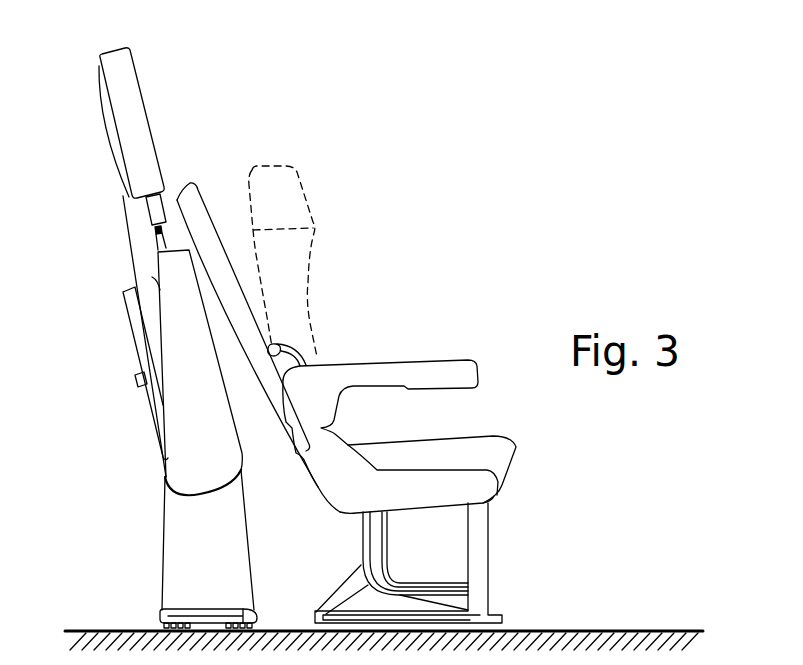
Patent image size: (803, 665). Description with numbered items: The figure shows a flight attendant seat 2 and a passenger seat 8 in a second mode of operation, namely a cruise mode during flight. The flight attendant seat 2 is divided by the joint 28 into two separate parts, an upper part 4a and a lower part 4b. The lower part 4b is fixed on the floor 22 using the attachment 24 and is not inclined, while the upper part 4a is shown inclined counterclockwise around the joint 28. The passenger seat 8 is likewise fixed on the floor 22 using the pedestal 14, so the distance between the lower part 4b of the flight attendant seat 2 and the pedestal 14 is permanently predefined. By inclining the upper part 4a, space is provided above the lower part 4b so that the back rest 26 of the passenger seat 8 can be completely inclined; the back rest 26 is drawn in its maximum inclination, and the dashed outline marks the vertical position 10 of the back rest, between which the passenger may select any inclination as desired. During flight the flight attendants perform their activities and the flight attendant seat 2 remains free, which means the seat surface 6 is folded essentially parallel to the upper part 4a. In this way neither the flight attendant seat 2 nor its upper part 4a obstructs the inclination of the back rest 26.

The flight attendant seat 2 is at (138, 58).
The upper part 4a is at (138, 118).
The lower part 4b is at (232, 556).
The seat surface 6 is at (133, 338).
The passenger seat 8 is at (403, 243).
The vertical position of the back rest 10 is at (297, 197).
The pedestal 14 is at (482, 548).
The floor 22 is at (606, 631).
The attachment 24 is at (170, 612).
The back rest 26 is at (191, 198).
The joint 28 is at (184, 492).